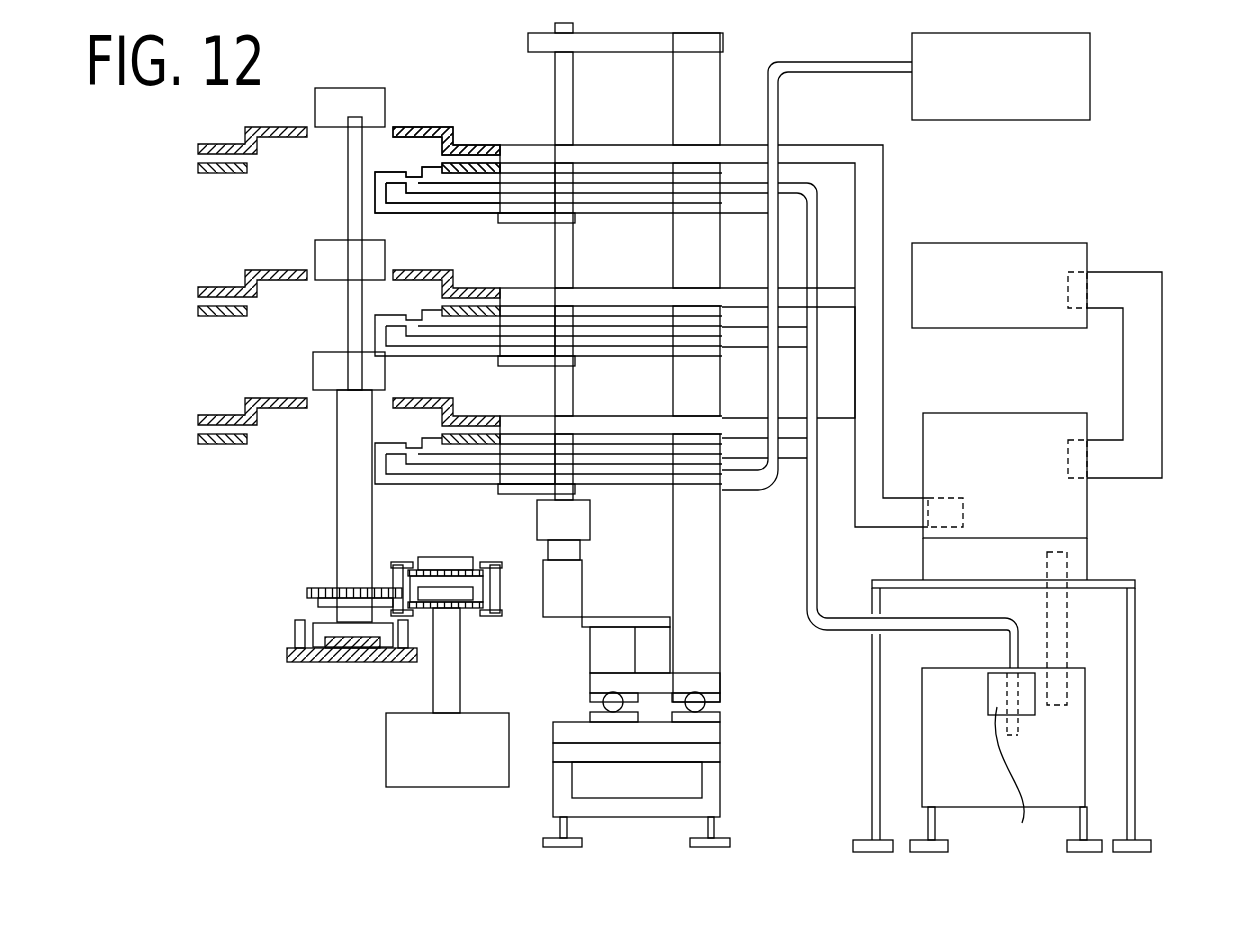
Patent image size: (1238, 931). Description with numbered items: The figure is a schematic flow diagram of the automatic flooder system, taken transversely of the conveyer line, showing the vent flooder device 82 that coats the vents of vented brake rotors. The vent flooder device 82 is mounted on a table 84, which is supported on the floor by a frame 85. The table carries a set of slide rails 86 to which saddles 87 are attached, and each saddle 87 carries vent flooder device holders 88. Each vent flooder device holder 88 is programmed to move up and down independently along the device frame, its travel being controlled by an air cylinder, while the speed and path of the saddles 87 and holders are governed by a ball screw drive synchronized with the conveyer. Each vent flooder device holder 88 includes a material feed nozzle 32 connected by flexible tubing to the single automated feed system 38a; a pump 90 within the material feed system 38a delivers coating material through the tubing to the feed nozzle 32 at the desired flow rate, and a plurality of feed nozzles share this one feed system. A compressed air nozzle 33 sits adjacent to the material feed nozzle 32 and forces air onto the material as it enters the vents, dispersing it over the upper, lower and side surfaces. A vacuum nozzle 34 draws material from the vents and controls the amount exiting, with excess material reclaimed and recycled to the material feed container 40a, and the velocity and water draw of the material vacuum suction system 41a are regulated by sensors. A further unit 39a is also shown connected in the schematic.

The material feed nozzle 32 is at (424, 170).
The compressed air nozzle 33 is at (390, 168).
The vacuum nozzle 34 is at (536, 152).
The vent flooder device 82 is at (692, 22).
The table 84 is at (705, 735).
The frame 85 is at (716, 786).
The slide rails 86 is at (613, 708).
The saddles 87 is at (600, 647).
The vent flooder device holder 88 is at (572, 218).
The pump 90 is at (1004, 775).
The automated feed system 38a is at (1073, 762).
The controller 39a is at (1085, 80).
The material feed container 40a is at (1075, 508).
The material vacuum suction system 41a is at (1073, 255).